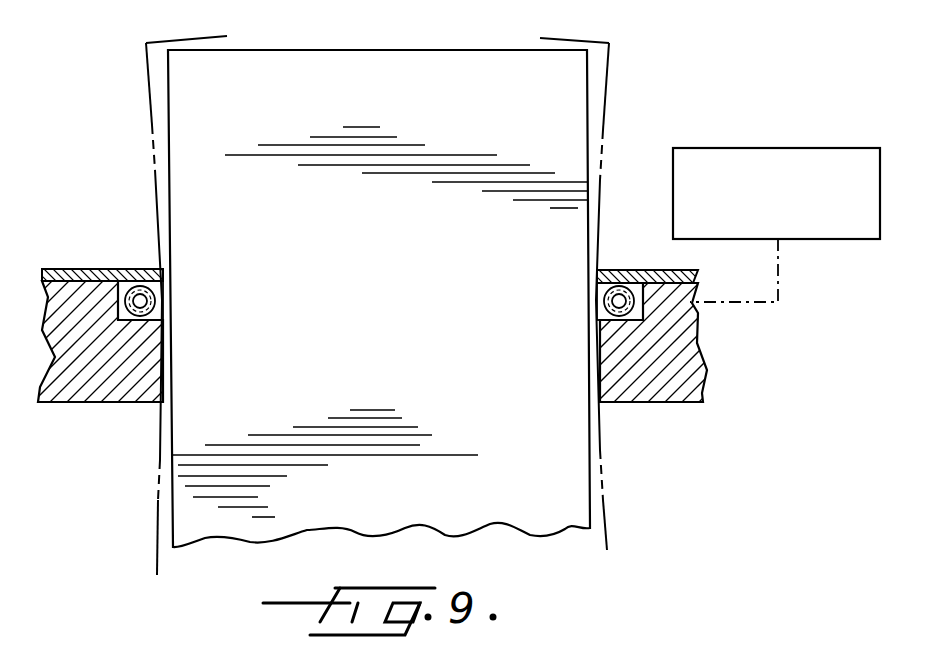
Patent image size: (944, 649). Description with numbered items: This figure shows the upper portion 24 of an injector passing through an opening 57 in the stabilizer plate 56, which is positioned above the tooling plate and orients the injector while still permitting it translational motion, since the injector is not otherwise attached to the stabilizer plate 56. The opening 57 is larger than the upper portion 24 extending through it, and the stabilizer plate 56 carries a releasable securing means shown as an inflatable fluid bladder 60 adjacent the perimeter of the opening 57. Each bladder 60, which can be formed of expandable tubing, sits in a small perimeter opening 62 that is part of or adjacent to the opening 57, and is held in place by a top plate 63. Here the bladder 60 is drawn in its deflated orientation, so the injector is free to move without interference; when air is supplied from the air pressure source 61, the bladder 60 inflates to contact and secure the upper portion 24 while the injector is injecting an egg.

The upper portion of injector 24 is at (390, 303).
The stabilizer plate 56 is at (698, 357).
The opening 57 is at (612, 378).
The inflatable fluid bladder 60 is at (172, 306).
The air pressure source 61 is at (787, 148).
The perimeter opening 62 is at (115, 289).
The top plate 63 is at (55, 270).